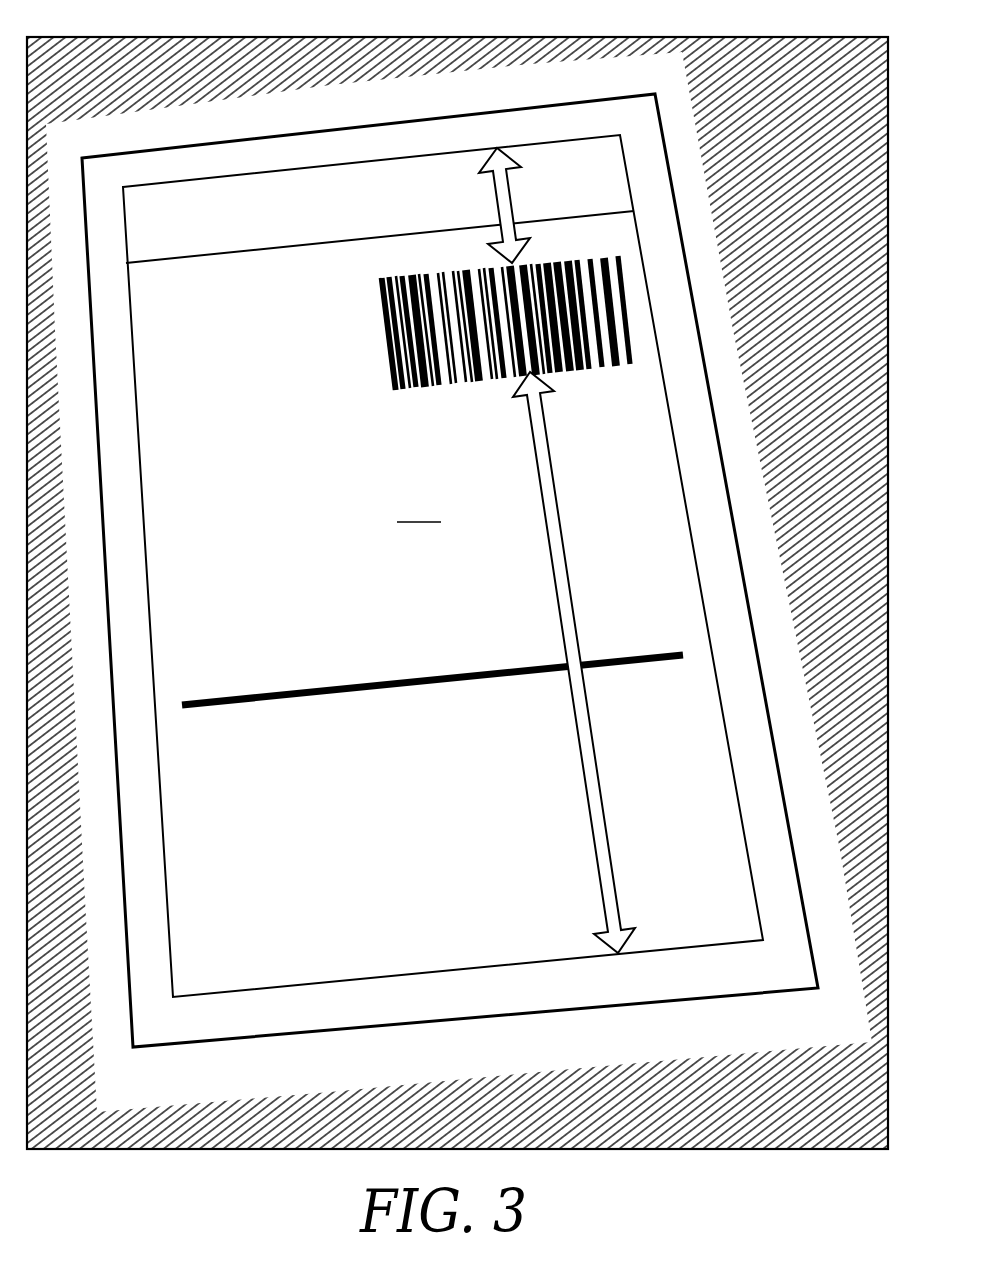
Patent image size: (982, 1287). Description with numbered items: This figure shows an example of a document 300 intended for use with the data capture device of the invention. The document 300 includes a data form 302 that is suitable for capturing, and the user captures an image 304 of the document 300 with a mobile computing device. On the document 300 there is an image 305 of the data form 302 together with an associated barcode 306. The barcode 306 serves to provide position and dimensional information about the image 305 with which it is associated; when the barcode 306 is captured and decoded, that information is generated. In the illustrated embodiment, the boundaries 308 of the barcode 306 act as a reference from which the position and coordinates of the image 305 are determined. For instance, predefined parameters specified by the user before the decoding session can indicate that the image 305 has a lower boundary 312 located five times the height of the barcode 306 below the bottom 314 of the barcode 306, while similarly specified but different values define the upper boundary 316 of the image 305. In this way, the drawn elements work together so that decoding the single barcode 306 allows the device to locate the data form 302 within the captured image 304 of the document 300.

The document 300 is at (536, 58).
The data form 302 is at (450, 570).
The image 304 is at (228, 36).
The image 305 is at (373, 160).
The barcode 306 is at (556, 256).
The boundaries 308 is at (378, 264).
The lower boundary 312 is at (618, 956).
The bottom 314 is at (526, 374).
The upper boundary 316 is at (497, 150).